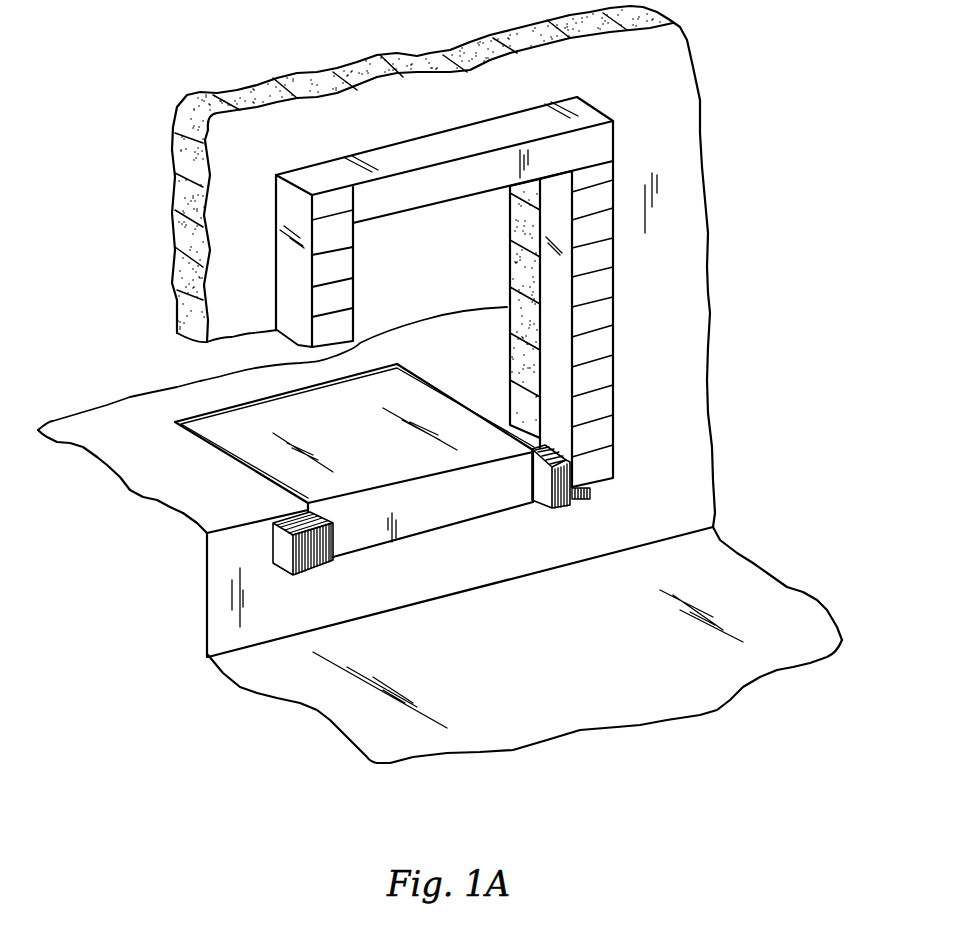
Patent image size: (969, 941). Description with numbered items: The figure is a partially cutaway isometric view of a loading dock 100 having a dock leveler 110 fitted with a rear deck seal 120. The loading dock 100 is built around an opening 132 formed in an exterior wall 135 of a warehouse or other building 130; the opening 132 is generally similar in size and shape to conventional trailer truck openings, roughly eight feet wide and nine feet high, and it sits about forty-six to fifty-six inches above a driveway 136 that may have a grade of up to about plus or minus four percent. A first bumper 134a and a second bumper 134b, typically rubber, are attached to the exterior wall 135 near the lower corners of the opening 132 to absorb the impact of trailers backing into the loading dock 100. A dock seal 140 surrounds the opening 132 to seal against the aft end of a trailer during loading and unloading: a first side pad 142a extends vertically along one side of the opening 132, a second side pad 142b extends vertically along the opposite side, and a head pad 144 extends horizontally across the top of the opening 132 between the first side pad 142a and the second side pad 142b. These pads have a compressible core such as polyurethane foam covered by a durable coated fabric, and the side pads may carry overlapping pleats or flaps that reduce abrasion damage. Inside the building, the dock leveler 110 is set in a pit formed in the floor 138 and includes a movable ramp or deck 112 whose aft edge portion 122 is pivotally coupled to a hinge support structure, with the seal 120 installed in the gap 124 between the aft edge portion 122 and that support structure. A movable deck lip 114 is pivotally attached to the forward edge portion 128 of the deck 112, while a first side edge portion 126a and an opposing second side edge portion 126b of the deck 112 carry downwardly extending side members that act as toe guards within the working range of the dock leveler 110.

The loading dock 100 is at (657, 308).
The dock leveler 110 is at (406, 398).
The deck 112 is at (260, 443).
The deck lip 114 is at (420, 520).
The rear deck seal 120 is at (208, 412).
The aft edge portion 122 is at (258, 400).
The gap 124 is at (366, 368).
The first side edge portion 126a is at (263, 488).
The second side edge portion 126b is at (470, 412).
The forward edge portion 128 is at (463, 470).
The building 130 is at (690, 500).
The opening 132 is at (520, 280).
The first bumper 134a is at (325, 565).
The second bumper 134b is at (575, 507).
The exterior wall 135 is at (676, 432).
The driveway 136 is at (585, 664).
The floor 138 is at (100, 435).
The dock seal 140 is at (593, 140).
The first side pad 142a is at (297, 260).
The second side pad 142b is at (552, 218).
The head pad 144 is at (440, 180).